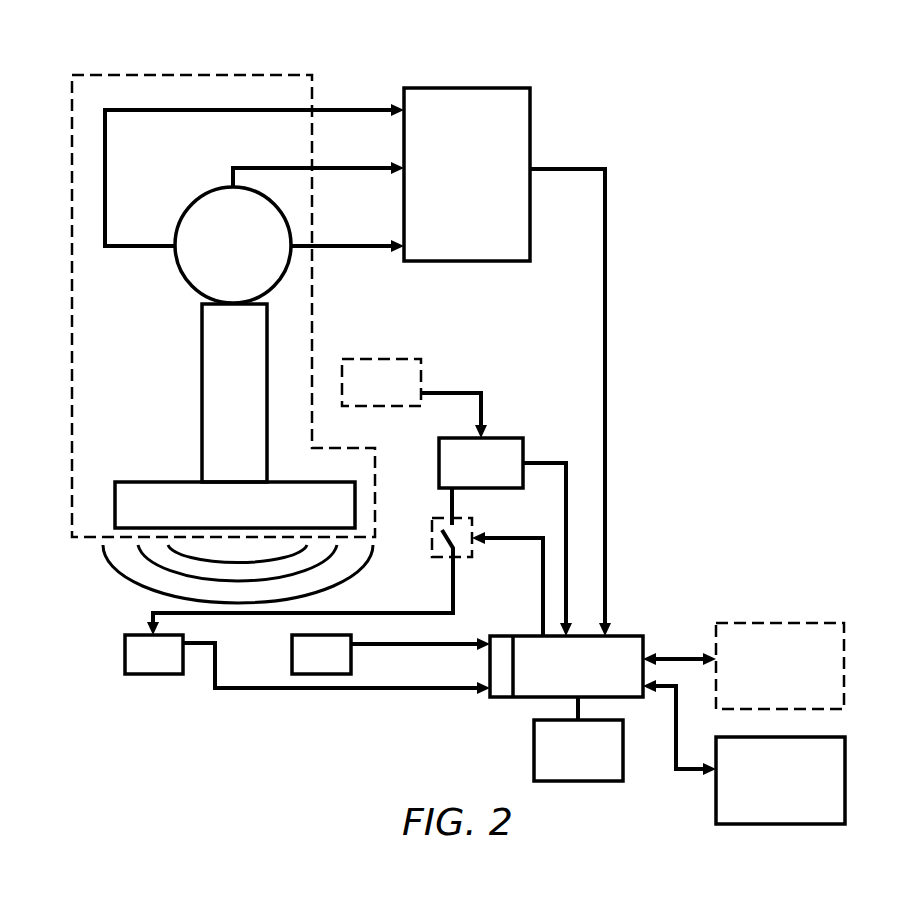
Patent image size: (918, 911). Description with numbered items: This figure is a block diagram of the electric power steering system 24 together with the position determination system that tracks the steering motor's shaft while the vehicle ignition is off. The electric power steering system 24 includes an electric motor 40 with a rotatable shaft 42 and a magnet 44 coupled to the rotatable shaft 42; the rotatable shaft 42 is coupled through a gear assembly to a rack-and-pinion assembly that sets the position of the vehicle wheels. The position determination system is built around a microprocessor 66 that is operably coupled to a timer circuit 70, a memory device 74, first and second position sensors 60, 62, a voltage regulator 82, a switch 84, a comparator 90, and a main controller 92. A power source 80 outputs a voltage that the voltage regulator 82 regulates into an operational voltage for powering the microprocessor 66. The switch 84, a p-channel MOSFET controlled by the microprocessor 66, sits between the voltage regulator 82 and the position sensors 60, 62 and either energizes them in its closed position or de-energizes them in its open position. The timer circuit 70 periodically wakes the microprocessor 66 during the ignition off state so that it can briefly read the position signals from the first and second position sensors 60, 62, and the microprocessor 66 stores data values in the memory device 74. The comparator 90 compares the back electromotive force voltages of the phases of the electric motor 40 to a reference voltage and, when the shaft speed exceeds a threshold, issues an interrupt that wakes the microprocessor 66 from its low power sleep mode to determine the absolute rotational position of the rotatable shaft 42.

The electric power steering system 24 is at (72, 205).
The electric motor 40 is at (200, 217).
The rotatable shaft 42 is at (210, 373).
The magnet 44 is at (123, 505).
The first position sensor 60 is at (152, 662).
The second position sensor 62 is at (302, 657).
The microprocessor 66 is at (617, 647).
The timer circuit 70 is at (543, 745).
The memory device 74 is at (723, 788).
The power source 80 is at (380, 368).
The voltage regulator 82 is at (503, 448).
The switch 84 is at (430, 537).
The comparator 90 is at (505, 100).
The main controller 92 is at (782, 633).